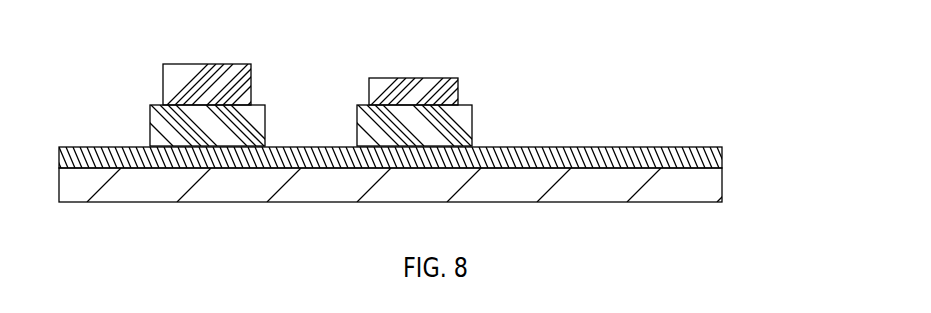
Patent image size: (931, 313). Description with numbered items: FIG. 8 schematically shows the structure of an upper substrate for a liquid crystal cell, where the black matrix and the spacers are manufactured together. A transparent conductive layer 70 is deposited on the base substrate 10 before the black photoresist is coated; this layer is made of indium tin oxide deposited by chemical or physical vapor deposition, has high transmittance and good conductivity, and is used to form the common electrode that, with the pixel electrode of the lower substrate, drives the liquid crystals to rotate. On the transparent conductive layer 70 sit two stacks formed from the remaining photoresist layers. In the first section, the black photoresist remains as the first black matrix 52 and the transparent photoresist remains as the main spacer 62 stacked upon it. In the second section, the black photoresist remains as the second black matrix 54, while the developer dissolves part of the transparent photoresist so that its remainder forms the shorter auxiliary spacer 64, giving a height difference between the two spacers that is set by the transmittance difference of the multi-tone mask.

The base substrate 10 is at (707, 187).
The transparent conductive layer 70 is at (723, 146).
The first black matrix 52 is at (160, 132).
The main spacer 62 is at (228, 78).
The second black matrix 54 is at (462, 120).
The auxiliary spacer 64 is at (430, 82).